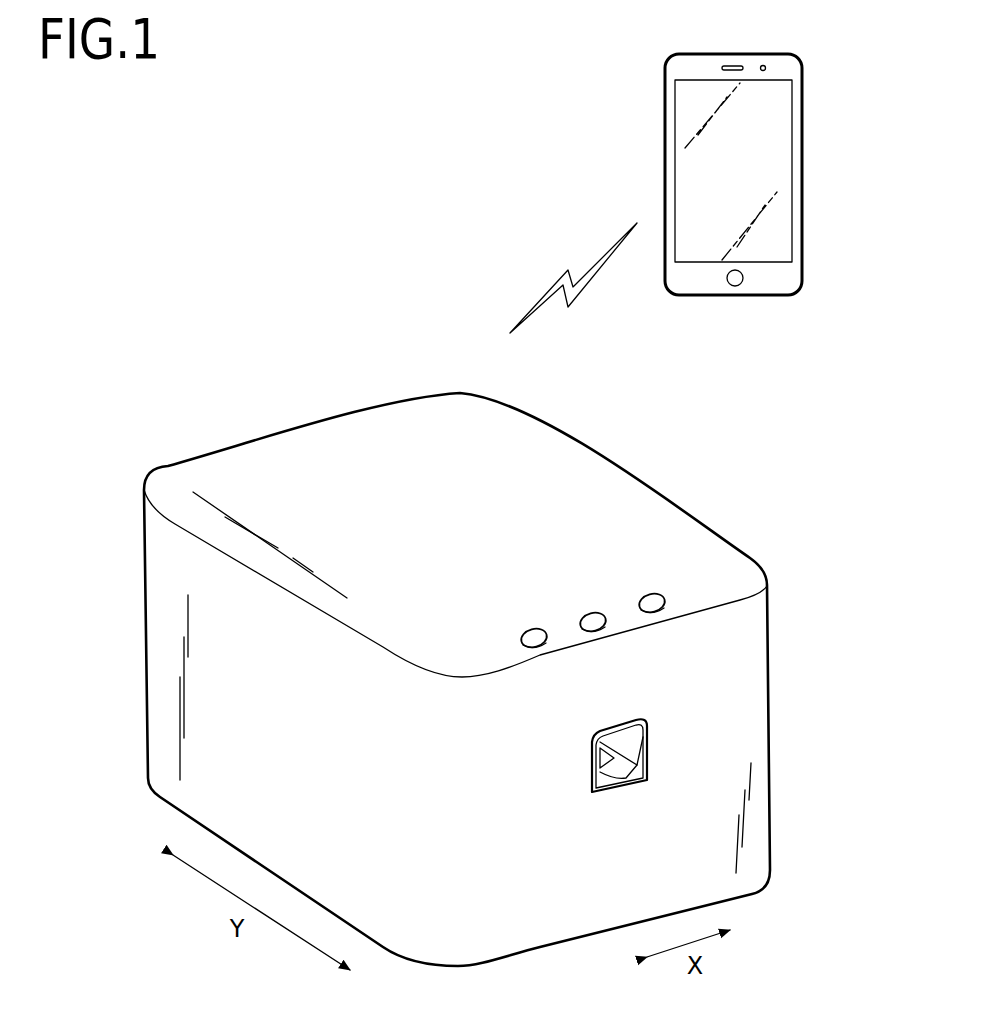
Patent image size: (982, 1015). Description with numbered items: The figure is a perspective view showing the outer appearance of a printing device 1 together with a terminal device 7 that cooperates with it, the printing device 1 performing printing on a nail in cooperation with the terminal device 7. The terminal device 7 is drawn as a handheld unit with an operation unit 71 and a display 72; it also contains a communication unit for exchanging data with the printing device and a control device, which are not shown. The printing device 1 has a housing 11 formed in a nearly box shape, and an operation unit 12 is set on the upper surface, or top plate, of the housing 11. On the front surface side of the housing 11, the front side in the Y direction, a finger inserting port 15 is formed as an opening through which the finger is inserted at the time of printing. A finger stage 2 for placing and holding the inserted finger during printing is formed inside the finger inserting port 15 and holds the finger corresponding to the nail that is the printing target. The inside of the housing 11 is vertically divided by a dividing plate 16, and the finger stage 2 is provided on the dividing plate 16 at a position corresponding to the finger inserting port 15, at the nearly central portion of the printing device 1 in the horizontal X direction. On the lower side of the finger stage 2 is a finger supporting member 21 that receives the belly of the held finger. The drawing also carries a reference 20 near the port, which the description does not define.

The printing device 1 is at (133, 543).
The housing 11 is at (192, 462).
The operation unit 12 is at (540, 640).
The finger inserting port 15 is at (637, 738).
The dividing plate 16 is at (633, 780).
The finger stage 2 is at (653, 768).
The paper edge 20 is at (607, 750).
The finger supporting member 21 is at (617, 773).
The terminal device 7 is at (817, 142).
The operation unit 71 is at (742, 281).
The display 72 is at (770, 230).